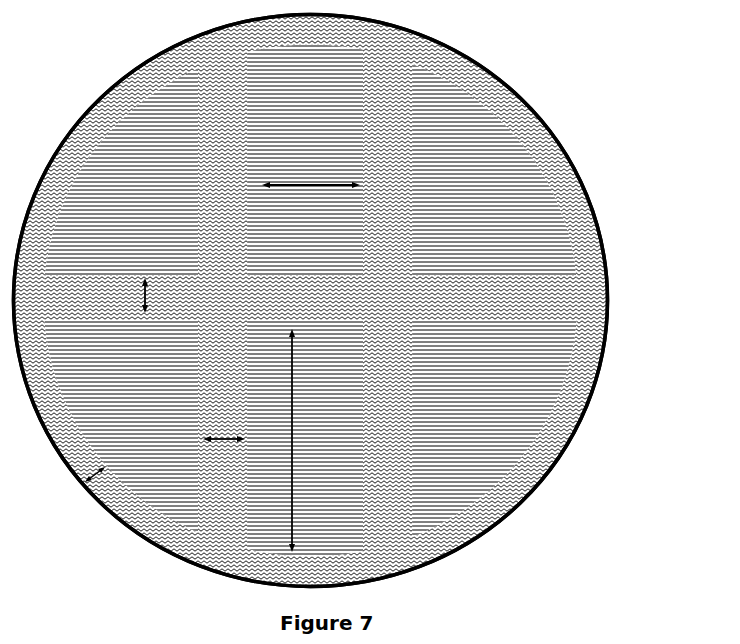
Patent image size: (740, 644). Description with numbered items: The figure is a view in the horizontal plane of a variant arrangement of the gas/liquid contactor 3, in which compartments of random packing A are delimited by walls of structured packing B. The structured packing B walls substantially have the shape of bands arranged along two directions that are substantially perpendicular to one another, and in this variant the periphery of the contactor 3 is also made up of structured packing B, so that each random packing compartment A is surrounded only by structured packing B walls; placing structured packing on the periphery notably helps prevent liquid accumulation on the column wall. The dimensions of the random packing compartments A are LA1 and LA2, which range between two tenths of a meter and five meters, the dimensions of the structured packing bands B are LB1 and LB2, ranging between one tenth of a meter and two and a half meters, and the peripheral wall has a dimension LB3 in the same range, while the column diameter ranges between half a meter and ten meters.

The gas/liquid contactor 3 is at (597, 382).
The random packing A is at (520, 173).
The structured packing B is at (397, 464).
The dimension of random packing compartment LA1 is at (311, 207).
The dimension of random packing compartment LA2 is at (315, 440).
The dimension of structured packing band LB1 is at (224, 420).
The dimension of structured packing band LB2 is at (179, 296).
The dimension of peripheral wall LB3 is at (119, 487).